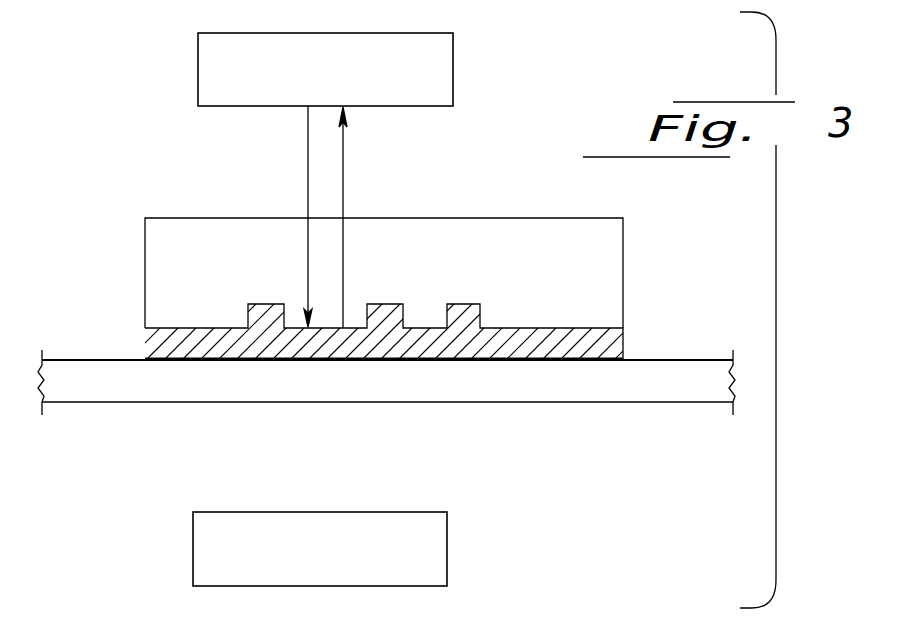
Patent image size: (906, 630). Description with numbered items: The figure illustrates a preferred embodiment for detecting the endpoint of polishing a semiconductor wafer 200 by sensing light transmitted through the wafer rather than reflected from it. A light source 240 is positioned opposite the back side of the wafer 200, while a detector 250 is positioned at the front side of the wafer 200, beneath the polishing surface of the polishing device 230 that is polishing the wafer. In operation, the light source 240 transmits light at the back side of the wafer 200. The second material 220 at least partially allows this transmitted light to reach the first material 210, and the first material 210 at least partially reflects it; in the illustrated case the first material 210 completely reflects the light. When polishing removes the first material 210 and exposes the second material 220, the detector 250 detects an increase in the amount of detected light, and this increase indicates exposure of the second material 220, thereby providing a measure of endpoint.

The wafer 200 is at (145, 275).
The first material 210 is at (623, 343).
The second material 220 is at (433, 228).
The polishing surface of the polishing device 230 is at (617, 405).
The light source 240 is at (455, 61).
The detector 250 is at (415, 511).